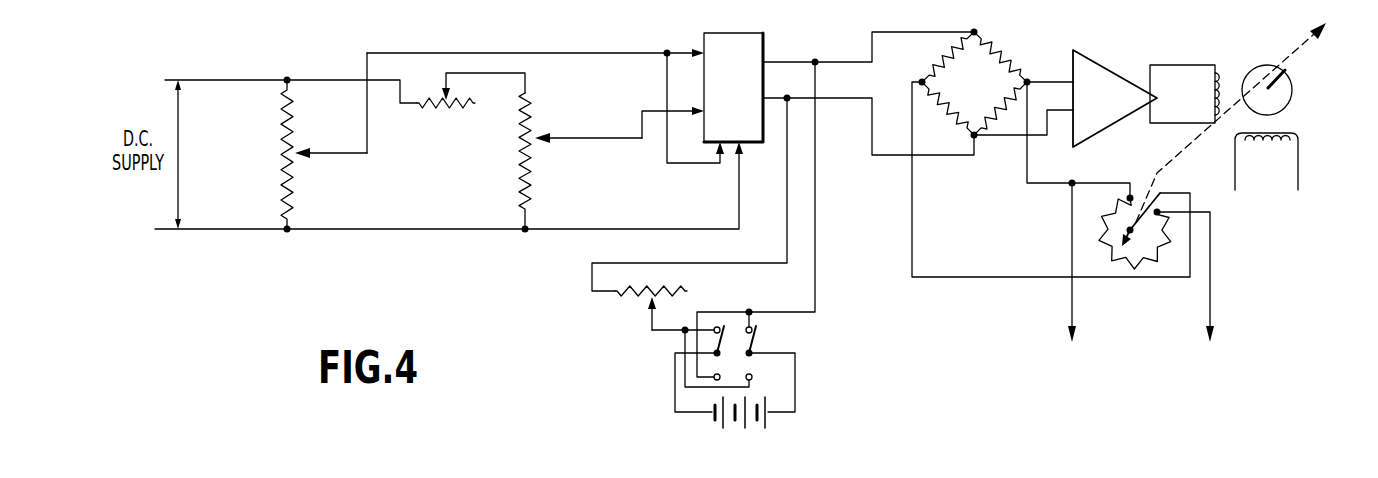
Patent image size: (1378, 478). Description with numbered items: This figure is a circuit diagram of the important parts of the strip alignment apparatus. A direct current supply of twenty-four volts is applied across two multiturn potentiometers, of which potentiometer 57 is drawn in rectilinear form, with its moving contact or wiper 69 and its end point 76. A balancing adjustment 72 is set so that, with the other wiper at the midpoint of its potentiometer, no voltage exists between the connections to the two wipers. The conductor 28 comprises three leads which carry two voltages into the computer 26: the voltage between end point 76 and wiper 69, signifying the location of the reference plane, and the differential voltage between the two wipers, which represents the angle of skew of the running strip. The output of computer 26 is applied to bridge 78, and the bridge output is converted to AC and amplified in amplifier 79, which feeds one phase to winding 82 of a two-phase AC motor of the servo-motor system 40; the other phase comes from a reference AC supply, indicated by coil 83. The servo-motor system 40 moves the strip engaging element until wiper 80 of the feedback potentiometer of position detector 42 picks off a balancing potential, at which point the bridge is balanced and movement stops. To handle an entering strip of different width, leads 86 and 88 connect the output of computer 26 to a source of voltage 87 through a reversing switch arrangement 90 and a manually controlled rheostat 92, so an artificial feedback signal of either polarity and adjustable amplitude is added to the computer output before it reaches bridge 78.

The computer 26 is at (744, 96).
The lead 28 is at (425, 52).
The servo-motor system 40 is at (1256, 57).
The position detector 42 is at (1143, 180).
The potentiometer 57 is at (280, 155).
The wiper 69 is at (305, 148).
The balancing adjustment 72 is at (448, 112).
The end point 76 is at (287, 233).
The bridge 78 is at (963, 89).
The amplifier 79 is at (1110, 60).
The wiper 80 is at (1116, 247).
The winding 82 is at (1226, 69).
The coil 83 is at (1262, 150).
The lead 86 is at (816, 262).
The source of voltage 87 is at (735, 432).
The lead 88 is at (785, 255).
The reversing switch arrangement 90 is at (736, 346).
The rheostat 92 is at (645, 302).